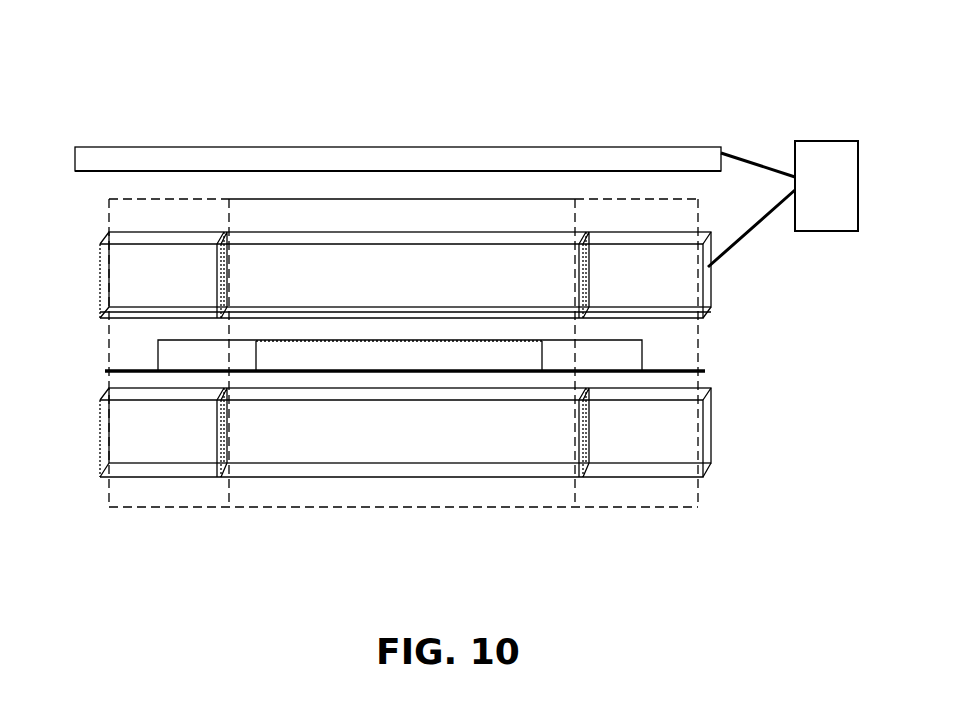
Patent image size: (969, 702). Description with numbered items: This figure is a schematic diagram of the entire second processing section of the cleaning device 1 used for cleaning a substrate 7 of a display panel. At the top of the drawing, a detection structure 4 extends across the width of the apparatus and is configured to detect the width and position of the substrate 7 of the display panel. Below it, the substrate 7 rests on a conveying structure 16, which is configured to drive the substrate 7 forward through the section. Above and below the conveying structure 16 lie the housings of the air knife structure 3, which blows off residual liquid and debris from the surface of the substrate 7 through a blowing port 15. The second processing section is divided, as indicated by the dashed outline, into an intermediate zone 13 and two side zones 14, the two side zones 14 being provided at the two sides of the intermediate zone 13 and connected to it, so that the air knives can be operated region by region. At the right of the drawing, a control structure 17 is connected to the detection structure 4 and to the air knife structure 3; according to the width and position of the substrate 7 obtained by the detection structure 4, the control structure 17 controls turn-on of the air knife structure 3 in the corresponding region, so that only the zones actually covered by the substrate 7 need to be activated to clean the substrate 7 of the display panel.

The cleaning device 1 is at (317, 127).
The air knife structure 3 is at (710, 410).
The detection structure 4 is at (106, 147).
The substrate 7 is at (443, 355).
The intermediate zone 13 is at (288, 212).
The side zones 14 is at (178, 493).
The blowing port 15 is at (673, 317).
The conveying structure 16 is at (108, 370).
The control structure 17 is at (826, 142).